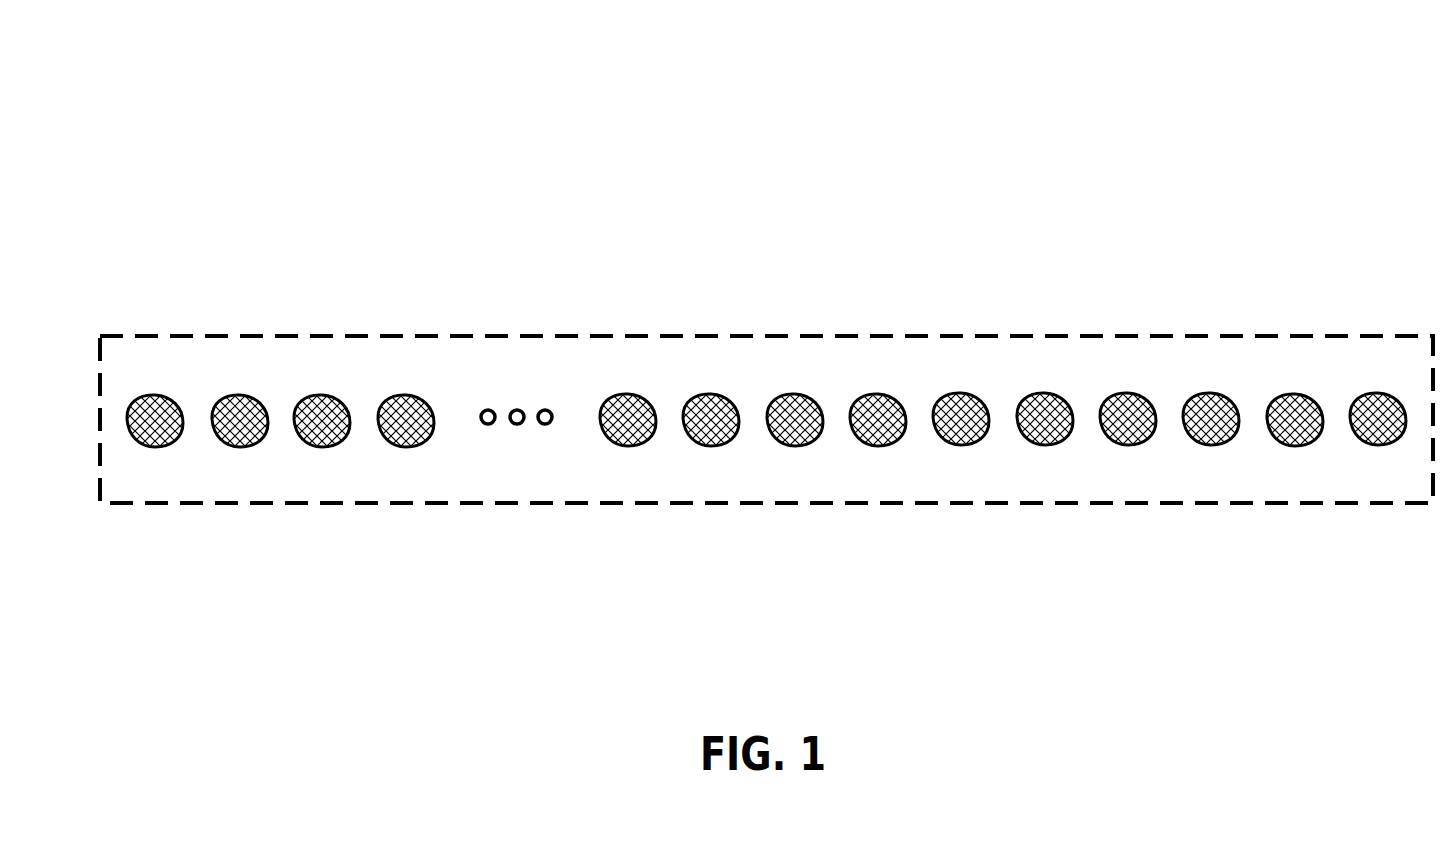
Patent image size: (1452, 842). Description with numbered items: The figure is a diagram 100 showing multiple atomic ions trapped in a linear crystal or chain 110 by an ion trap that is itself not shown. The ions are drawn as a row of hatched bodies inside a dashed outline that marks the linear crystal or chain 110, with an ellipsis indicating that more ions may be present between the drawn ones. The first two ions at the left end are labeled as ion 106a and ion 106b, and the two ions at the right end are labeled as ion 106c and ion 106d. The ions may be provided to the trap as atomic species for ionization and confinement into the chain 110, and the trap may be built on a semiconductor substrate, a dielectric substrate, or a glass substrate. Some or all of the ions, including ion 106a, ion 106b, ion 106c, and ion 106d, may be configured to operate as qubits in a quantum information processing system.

The diagram 100 is at (264, 98).
The linear crystal or chain 110 is at (829, 334).
The atomic ion 106a is at (184, 404).
The atomic ion 106b is at (264, 403).
The atomic ion 106c is at (1316, 401).
The atomic ion 106d is at (1398, 398).